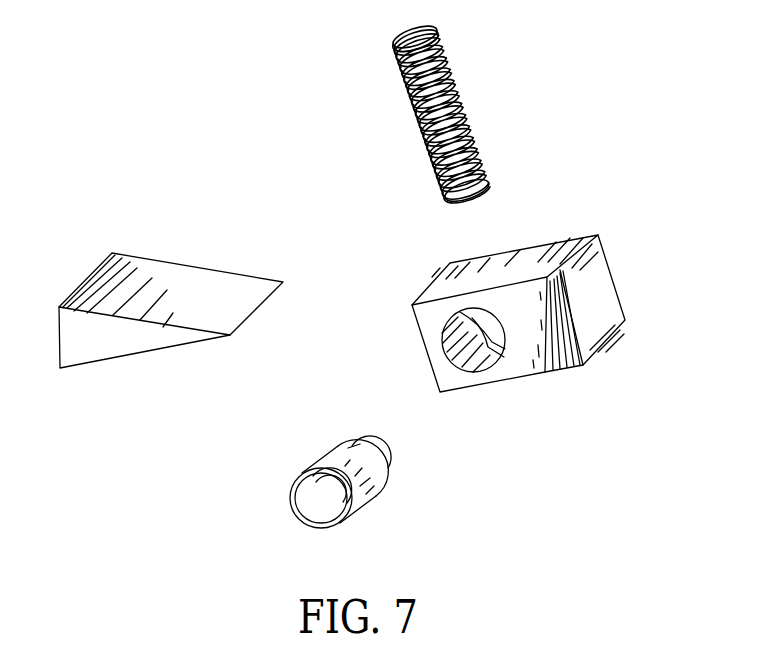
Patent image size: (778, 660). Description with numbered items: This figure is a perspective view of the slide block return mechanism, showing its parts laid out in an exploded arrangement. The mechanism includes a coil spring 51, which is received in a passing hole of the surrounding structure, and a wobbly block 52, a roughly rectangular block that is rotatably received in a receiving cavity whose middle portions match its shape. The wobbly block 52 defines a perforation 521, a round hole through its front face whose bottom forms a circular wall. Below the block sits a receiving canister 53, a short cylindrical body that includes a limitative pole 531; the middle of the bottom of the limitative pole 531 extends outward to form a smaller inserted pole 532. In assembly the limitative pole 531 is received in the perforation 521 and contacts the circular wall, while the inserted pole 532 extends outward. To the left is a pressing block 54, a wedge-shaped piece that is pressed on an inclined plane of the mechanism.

The spring 51 is at (460, 95).
The wobbly block 52 is at (556, 366).
The perforation 521 is at (484, 337).
The receiving canister 53 is at (325, 499).
The limitative pole 531 is at (313, 510).
The inserted pole 532 is at (357, 443).
The pressing block 54 is at (120, 278).